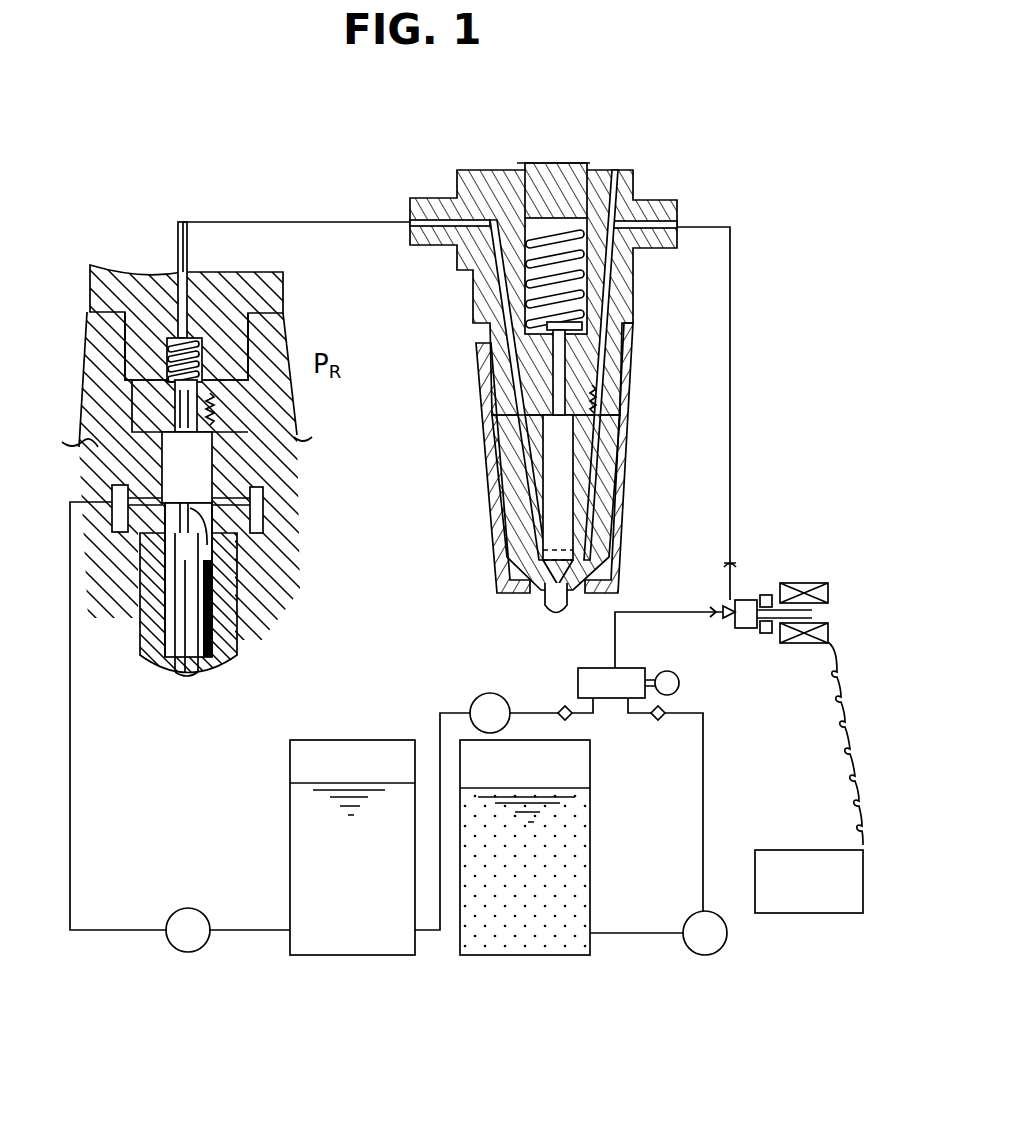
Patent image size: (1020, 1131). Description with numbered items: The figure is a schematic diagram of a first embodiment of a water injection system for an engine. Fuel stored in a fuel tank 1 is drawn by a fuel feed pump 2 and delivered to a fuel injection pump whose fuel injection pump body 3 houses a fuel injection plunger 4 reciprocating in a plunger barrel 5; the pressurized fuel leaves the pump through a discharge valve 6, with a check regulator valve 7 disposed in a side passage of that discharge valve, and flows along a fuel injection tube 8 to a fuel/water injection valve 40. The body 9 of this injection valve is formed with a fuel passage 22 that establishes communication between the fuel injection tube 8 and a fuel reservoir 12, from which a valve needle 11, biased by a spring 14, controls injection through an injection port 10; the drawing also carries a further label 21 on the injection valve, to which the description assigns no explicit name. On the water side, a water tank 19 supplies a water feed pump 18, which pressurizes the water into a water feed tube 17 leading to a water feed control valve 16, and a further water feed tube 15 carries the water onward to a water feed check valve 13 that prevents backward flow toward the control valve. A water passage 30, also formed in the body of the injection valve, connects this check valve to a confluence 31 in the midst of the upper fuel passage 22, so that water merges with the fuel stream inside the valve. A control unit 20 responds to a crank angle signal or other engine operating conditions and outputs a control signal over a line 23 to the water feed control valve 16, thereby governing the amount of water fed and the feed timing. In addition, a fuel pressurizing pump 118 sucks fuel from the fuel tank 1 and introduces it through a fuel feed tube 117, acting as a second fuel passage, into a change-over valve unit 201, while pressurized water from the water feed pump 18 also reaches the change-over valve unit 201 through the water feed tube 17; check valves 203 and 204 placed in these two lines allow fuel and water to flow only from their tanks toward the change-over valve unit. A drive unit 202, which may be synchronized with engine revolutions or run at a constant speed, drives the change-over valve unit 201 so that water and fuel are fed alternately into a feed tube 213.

The fuel tank 1 is at (290, 840).
The fuel feed pump 2 is at (175, 912).
The fuel injection pump body 3 is at (90, 440).
The fuel injection plunger 4 is at (175, 668).
The plunger barrel 5 is at (140, 625).
The discharge valve 6 is at (170, 340).
The check regulator valve 7 is at (298, 438).
The fuel injection tube 8 is at (262, 222).
The body of the injection valve 9 is at (483, 297).
The injection port 10 is at (545, 618).
The valve needle 11 is at (557, 498).
The fuel reservoir 12 is at (505, 588).
The water feed check valve 13 is at (630, 402).
The spring 14 is at (625, 335).
The water feed tube 15 is at (732, 380).
The water feed control valve 16 is at (730, 628).
The water feed tube 17 is at (704, 803).
The water feed pump 18 is at (710, 955).
The water tank 19 is at (585, 955).
The control unit 20 is at (838, 913).
The holder body 21 is at (612, 268).
The fuel passage 22 is at (485, 325).
The line 23 is at (853, 721).
The water passage 30 is at (605, 578).
The confluence 31 is at (545, 552).
The fuel/water injection valve 40 is at (548, 362).
The fuel feed tube 117 is at (527, 712).
The fuel pressurizing pump 118 is at (469, 712).
The change-over valve unit 201 is at (578, 685).
The drive unit 202 is at (668, 671).
The check valve 203 is at (572, 716).
The check valve 204 is at (660, 720).
The feed tube 213 is at (613, 636).